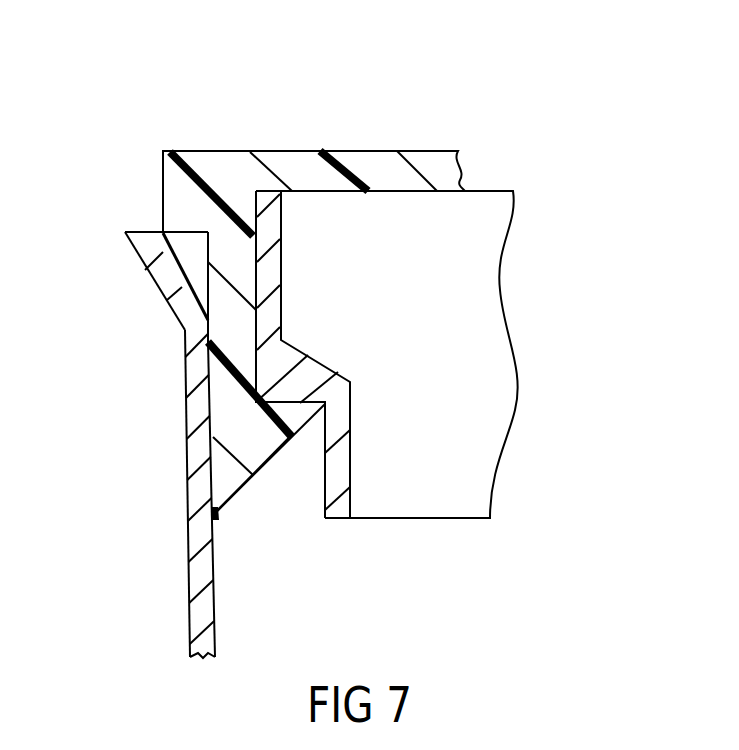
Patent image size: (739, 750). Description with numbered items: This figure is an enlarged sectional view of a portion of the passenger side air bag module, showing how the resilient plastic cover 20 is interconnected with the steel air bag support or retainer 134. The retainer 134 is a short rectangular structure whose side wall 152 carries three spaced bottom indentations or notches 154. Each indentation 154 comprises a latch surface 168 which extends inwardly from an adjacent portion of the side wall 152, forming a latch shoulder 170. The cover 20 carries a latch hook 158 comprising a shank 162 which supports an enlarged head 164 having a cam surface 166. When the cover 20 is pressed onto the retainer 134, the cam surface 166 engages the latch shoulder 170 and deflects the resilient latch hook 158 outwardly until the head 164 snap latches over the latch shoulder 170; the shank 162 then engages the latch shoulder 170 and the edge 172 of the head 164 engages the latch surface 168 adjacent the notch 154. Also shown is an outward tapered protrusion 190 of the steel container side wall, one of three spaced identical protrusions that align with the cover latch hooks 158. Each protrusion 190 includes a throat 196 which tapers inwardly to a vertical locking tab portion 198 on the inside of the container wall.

The cover 20 is at (438, 140).
The side wall 152 is at (283, 200).
The shank 162 is at (235, 257).
The throat 196 is at (160, 230).
The outward tapered protrusion 190 is at (148, 268).
The latch surface 168 is at (313, 410).
The edge 172 is at (302, 388).
The air bag support or retainer 134 is at (300, 307).
The cam surface 166 is at (290, 437).
The enlarged head 164 is at (225, 430).
The latch shoulder 170 is at (257, 313).
The vertical locking tab portion 198 is at (215, 378).
The bottom indentation or notch 154 is at (294, 480).
The latch hook 158 is at (234, 497).